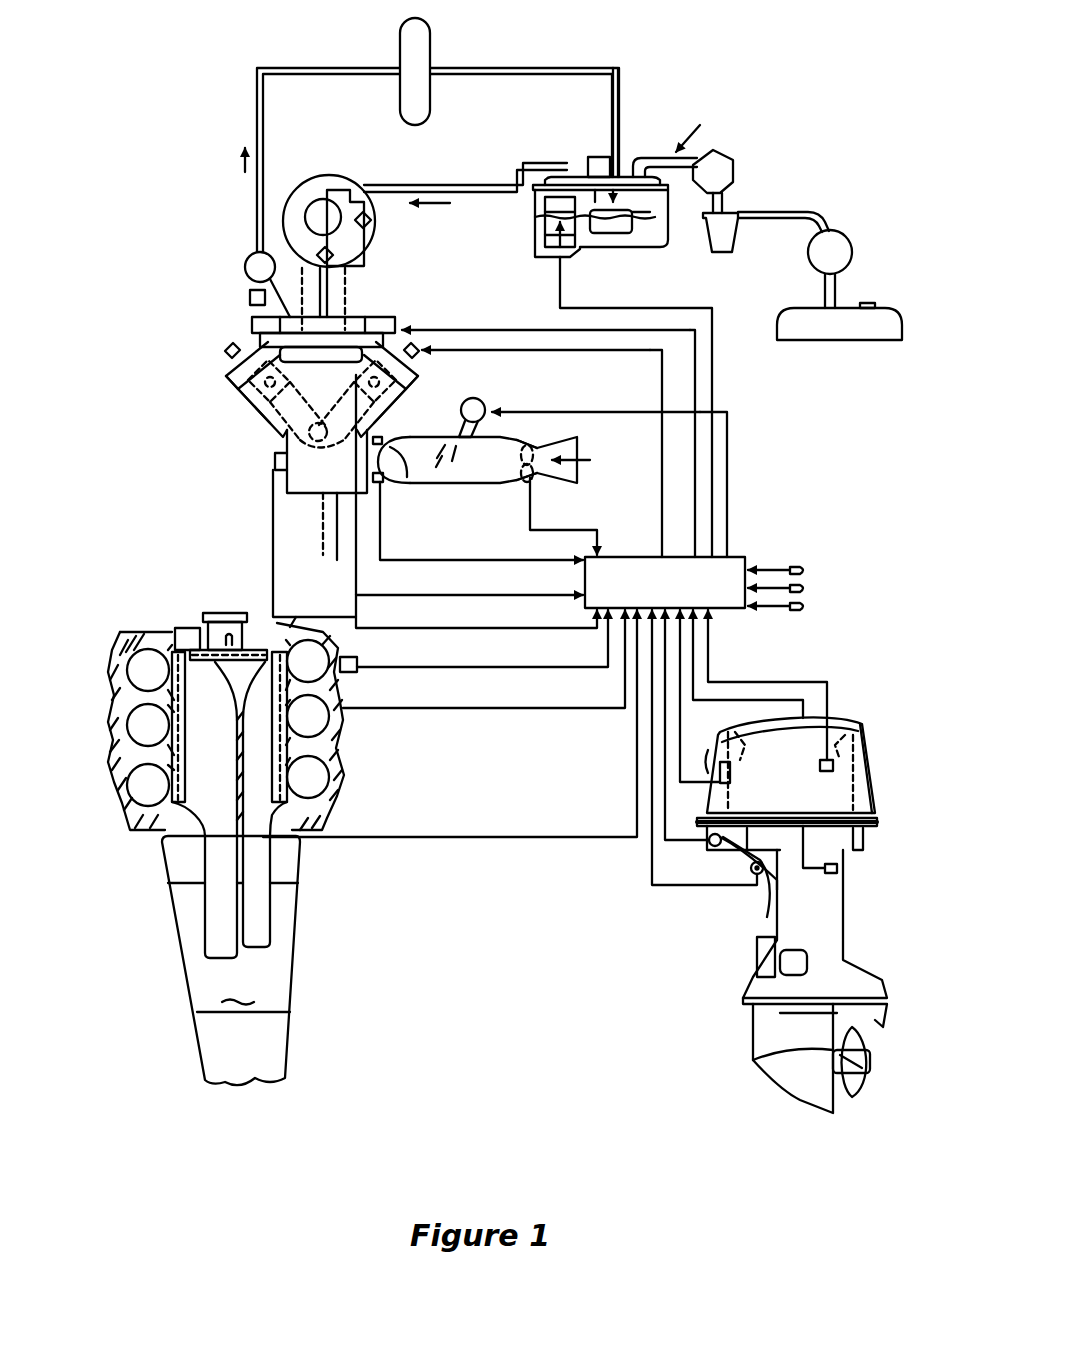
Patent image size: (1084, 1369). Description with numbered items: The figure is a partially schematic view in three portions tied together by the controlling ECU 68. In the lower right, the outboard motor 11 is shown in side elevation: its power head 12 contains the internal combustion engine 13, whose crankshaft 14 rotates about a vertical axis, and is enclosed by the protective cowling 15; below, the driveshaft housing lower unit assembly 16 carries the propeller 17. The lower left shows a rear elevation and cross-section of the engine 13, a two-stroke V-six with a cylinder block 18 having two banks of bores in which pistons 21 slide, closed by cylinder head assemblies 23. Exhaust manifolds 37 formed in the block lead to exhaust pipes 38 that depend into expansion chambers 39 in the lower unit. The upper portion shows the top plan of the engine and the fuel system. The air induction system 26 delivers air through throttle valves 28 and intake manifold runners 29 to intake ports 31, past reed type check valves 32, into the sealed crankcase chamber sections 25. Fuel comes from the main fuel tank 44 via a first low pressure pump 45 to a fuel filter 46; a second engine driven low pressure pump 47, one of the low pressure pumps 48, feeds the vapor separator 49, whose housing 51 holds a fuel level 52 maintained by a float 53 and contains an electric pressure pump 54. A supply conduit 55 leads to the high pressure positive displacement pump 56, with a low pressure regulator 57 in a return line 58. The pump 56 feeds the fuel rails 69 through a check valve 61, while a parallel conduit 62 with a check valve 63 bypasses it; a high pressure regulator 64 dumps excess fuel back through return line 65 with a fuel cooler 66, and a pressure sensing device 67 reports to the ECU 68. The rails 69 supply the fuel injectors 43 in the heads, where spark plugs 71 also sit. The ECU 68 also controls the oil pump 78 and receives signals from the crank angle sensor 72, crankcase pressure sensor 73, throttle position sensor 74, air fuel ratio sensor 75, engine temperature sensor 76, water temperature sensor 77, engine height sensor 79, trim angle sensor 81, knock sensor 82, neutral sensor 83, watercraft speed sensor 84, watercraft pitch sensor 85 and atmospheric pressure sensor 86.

The outboard motor 11 is at (864, 713).
The power head 12 is at (877, 771).
The internal combustion engine 13 is at (350, 752).
The crankshaft 14 is at (327, 495).
The protective cowling 15 is at (735, 730).
The driveshaft housing lower unit assembly 16 is at (295, 990).
The propeller 17 is at (848, 1097).
The cylinder block 18 is at (256, 410).
The pistons 21 is at (258, 438).
The cylinder head assemblies 23 is at (240, 380).
The crankcase chamber sections 25 is at (273, 520).
The air induction system 26 is at (520, 436).
The throttle valve 28 is at (520, 472).
The intake manifold runners 29 is at (470, 482).
The intake ports 31 is at (381, 490).
The reed type check valves 32 is at (396, 476).
The exhaust manifolds 37 is at (265, 858).
The exhaust pipes 38 is at (205, 928).
The expansion chambers 39 is at (238, 986).
The fuel injectors 43 is at (358, 325).
The main fuel tank 44 is at (825, 340).
The first low pressure pump 45 is at (840, 240).
The fuel filter 46 is at (727, 253).
The second engine driven low pressure fuel pump 47 is at (733, 172).
The low pressure fuel pumps 48 is at (800, 212).
The vapor separator 49 is at (674, 131).
The vapor separator outer housing 51 is at (530, 250).
The fuel level 52 is at (622, 248).
The float 53 is at (622, 207).
The electrically driven pressure pump 54 is at (553, 201).
The supply conduit 55 is at (412, 184).
The high pressure positive displacement pump 56 is at (320, 205).
The low pressure regulator 57 is at (603, 165).
The return line 58 is at (558, 163).
The check valve 61 is at (307, 208).
The parallel conduit 62 is at (340, 252).
The check valve 63 is at (374, 220).
The high pressure regulator 64 is at (250, 263).
The return line 65 is at (330, 68).
The fuel heat exchanger or cooler 66 is at (420, 40).
The pressure sensing device 67 is at (248, 298).
The ECU 68 is at (633, 557).
The fuel rails 69 is at (253, 327).
The spark plugs 71 is at (228, 348).
The crank angle sensor 72 is at (337, 560).
The crankcase pressure sensor 73 is at (275, 462).
The throttle position sensor 74 is at (540, 480).
The air fuel ratio sensor 75 is at (360, 660).
The engine temperature sensor 76 is at (345, 700).
The water temperature sensor 77 is at (838, 765).
The oil pump 78 is at (486, 402).
The engine height sensor 79 is at (718, 850).
The trim angle sensor 81 is at (755, 876).
The engine vibration or knock sensor 82 is at (735, 781).
The neutral sensor 83 is at (840, 868).
The watercraft speed sensor 84 is at (802, 567).
The watercraft pitch sensor 85 is at (802, 588).
The atmospheric pressure sensor 86 is at (802, 608).